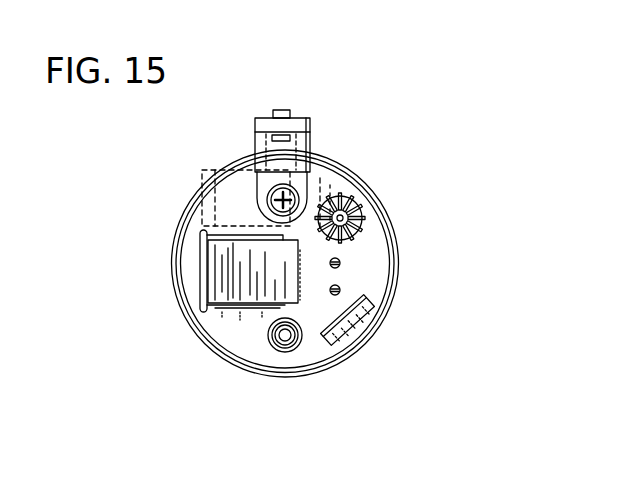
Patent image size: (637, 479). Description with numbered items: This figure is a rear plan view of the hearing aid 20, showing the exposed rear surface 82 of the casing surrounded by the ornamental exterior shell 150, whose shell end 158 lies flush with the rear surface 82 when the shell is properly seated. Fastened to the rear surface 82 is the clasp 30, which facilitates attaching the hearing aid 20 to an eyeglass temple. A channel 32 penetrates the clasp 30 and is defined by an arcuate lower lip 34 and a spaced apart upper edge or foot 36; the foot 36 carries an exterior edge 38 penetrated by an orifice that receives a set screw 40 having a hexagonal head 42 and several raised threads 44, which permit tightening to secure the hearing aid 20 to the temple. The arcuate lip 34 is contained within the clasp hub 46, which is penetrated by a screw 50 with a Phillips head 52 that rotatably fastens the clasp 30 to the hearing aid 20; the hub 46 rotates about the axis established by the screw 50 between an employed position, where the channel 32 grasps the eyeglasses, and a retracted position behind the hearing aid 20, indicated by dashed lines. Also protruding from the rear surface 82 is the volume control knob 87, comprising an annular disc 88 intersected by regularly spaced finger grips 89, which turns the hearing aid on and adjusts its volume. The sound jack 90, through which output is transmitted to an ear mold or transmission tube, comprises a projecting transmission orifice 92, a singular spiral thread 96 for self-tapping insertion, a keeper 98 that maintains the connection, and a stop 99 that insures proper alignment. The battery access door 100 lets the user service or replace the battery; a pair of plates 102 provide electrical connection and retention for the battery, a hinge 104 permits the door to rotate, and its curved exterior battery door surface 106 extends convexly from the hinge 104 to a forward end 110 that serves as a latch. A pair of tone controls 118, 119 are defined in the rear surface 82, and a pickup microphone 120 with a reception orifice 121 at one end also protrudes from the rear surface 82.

The hearing aid 20 is at (460, 365).
The clasp 30 is at (318, 131).
The channel 32 is at (255, 152).
The arcuate lower lip 34 is at (256, 172).
The foot 36 is at (258, 148).
The exterior edge 38 is at (262, 122).
The set screw 40 is at (293, 104).
The hexagonal head 42 is at (278, 109).
The raised threads 44 is at (312, 147).
The clasp hub 46 is at (258, 207).
The screw 50 is at (297, 185).
The Phillips head 52 is at (268, 193).
The rear surface 82 is at (339, 367).
The volume control knob 87 is at (362, 251).
The annular disc 88 is at (358, 188).
The finger grips 89 is at (365, 220).
The sound jack 90 is at (291, 362).
The transmission orifice 92 is at (282, 340).
The spiral thread 96 is at (272, 328).
The keeper 98 is at (276, 309).
The stop 99 is at (268, 309).
The battery access door 100 is at (186, 276).
The plates 102 is at (262, 310).
The hinge 104 is at (206, 310).
The battery door surface 106 is at (240, 262).
The forward end 110 is at (311, 285).
The tone control 118 is at (350, 254).
The tone control 119 is at (345, 290).
The pickup microphone 120 is at (338, 343).
The reception orifice 121 is at (377, 300).
The ornamental exterior shell 150 is at (368, 176).
The shell end 158 is at (396, 241).